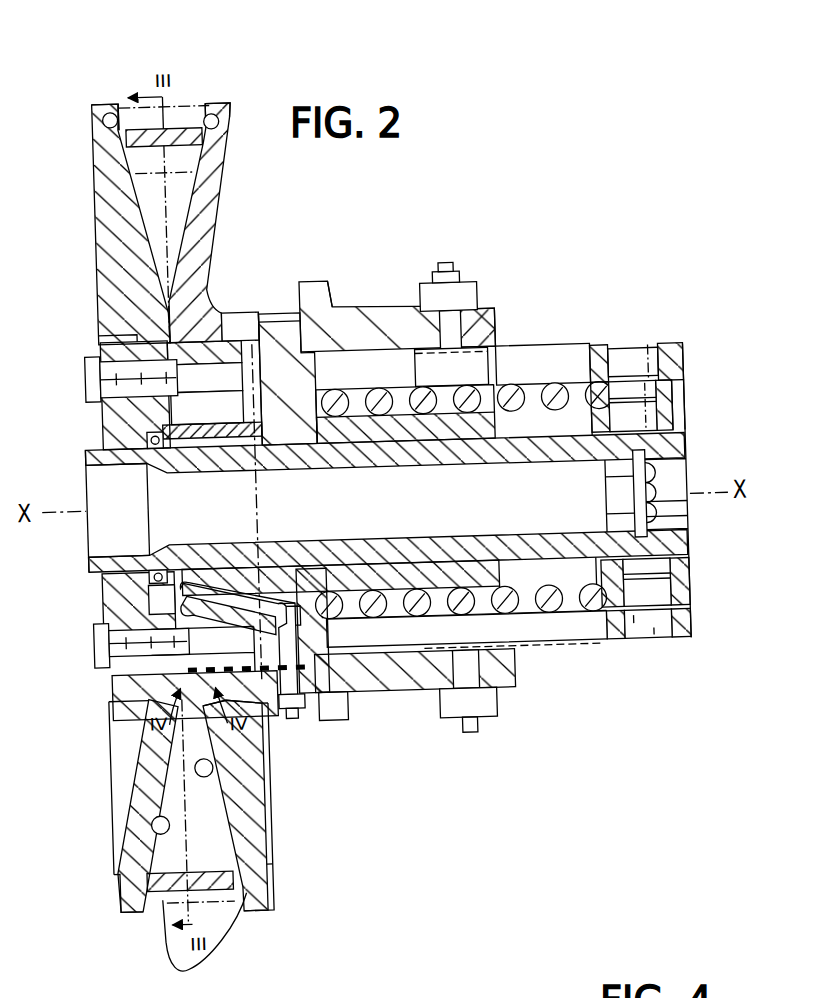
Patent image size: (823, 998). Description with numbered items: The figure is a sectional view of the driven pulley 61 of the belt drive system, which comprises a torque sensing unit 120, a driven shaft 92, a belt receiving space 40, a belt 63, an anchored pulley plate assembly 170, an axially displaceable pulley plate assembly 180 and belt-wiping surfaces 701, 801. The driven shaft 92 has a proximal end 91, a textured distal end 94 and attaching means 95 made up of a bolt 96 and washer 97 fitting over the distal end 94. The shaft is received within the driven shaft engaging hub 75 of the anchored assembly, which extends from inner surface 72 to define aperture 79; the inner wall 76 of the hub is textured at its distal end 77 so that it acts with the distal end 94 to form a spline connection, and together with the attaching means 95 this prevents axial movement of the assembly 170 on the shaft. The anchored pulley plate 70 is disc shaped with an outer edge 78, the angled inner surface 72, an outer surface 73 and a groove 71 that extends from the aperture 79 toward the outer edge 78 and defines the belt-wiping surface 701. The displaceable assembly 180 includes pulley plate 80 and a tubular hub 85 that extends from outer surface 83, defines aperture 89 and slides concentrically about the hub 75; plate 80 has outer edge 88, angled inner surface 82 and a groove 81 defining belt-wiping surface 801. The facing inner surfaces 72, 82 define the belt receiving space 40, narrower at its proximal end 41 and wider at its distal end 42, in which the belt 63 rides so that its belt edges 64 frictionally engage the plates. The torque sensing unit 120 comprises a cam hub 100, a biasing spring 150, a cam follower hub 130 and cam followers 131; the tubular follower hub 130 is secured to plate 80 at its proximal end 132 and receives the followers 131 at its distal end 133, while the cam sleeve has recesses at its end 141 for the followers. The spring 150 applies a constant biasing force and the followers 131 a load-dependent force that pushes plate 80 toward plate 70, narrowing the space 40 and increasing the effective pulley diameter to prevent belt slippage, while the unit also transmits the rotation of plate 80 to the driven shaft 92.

The belt receiving space 40 is at (172, 841).
The proximal end 41 is at (173, 737).
The distal end 42 is at (244, 862).
The driven pulley 61 is at (107, 940).
The belt 63 is at (205, 139).
The belt edges 64 is at (206, 945).
The anchored pulley plate 70 is at (123, 830).
The groove 71 is at (115, 112).
The inner surface 72 is at (146, 815).
The outer surface 73 is at (190, 762).
The driven shaft engaging hub 75 is at (89, 446).
The inner wall 76 is at (551, 465).
The distal end 77 is at (645, 551).
The outer edge 78 is at (104, 97).
The aperture 79 is at (196, 461).
The axially displaceable pulley plate 80 is at (232, 840).
The groove 81 is at (231, 117).
The inner surface 82 is at (230, 752).
The outer surface 83 is at (238, 783).
The tubular hub 85 is at (286, 397).
The outer edge 88 is at (243, 98).
The aperture 89 is at (150, 428).
The proximal end 91 is at (96, 465).
The driven shaft 92 is at (177, 515).
The distal end 94 is at (598, 523).
The attaching means 95 is at (690, 492).
The bolt 96 is at (673, 508).
The washer 97 is at (647, 520).
The cam hub 100 is at (671, 403).
The torque sensing unit 120 is at (545, 654).
The cam follower hub 130 is at (400, 320).
The cam followers 131 is at (469, 284).
The proximal end 132 is at (324, 280).
The distal end 133 is at (490, 333).
The end 141 is at (542, 364).
The biasing spring 150 is at (556, 394).
The anchored pulley plate assembly 170 is at (106, 896).
The axially displaceable pulley plate assembly 180 is at (263, 901).
The belt-wiping surface 701 is at (130, 96).
The belt-wiping surface 801 is at (218, 98).